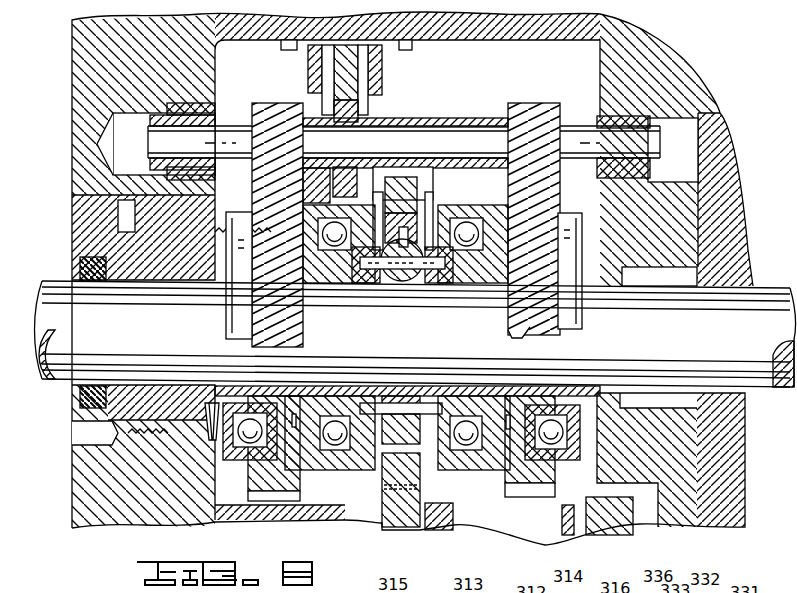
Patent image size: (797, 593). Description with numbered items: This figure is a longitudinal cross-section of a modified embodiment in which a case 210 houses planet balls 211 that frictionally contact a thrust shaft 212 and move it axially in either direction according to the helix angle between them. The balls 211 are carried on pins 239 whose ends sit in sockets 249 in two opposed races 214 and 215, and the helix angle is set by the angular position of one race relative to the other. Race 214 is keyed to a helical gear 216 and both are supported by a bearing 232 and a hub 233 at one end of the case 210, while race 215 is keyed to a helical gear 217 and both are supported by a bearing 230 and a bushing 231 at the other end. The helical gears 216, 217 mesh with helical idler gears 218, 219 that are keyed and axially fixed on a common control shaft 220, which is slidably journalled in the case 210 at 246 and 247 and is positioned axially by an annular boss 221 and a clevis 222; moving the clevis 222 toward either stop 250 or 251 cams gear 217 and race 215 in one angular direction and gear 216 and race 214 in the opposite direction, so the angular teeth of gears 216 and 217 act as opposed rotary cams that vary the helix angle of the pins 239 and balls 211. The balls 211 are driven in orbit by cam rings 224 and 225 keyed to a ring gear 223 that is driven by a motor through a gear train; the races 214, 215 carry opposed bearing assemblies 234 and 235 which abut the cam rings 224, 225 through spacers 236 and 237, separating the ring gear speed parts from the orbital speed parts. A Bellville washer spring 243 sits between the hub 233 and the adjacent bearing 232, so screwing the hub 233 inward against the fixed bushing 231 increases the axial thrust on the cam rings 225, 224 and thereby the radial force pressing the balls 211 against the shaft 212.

The case 210 is at (77, 130).
The planet balls 211 is at (405, 380).
The thrust shaft 212 is at (62, 385).
The race 214 is at (338, 278).
The race 215 is at (470, 307).
The helical gear 216 is at (300, 333).
The helical gear 217 is at (522, 333).
The helical idler gear 218 is at (274, 108).
The helical idler gear 219 is at (545, 107).
The control shaft 220 is at (473, 133).
The annular boss 221 is at (365, 108).
The clevis 222 is at (378, 87).
The ring gear 223 is at (400, 180).
The cam ring 224 is at (352, 282).
The cam ring 225 is at (440, 285).
The bearing 230 is at (563, 333).
The bushing 231 is at (613, 287).
The bearing 232 is at (253, 405).
The hub 233 is at (152, 262).
The bearing assembly 234 is at (316, 205).
The bearing assembly 235 is at (447, 160).
The spacer 236 is at (370, 162).
The spacer 237 is at (430, 187).
The pins 239 is at (440, 468).
The Bellville washer spring 243 is at (215, 443).
The journal 246 is at (160, 133).
The journal 247 is at (635, 127).
The sockets 249 is at (372, 282).
The stop 250 is at (285, 47).
The stop 251 is at (405, 48).